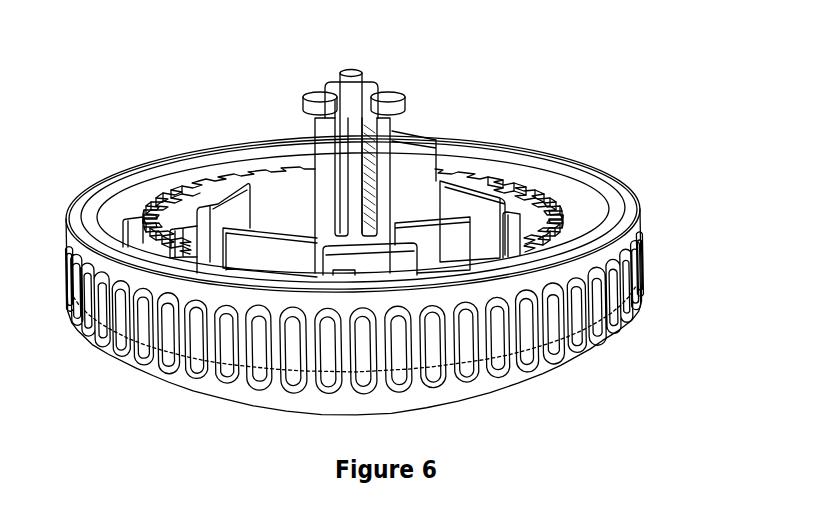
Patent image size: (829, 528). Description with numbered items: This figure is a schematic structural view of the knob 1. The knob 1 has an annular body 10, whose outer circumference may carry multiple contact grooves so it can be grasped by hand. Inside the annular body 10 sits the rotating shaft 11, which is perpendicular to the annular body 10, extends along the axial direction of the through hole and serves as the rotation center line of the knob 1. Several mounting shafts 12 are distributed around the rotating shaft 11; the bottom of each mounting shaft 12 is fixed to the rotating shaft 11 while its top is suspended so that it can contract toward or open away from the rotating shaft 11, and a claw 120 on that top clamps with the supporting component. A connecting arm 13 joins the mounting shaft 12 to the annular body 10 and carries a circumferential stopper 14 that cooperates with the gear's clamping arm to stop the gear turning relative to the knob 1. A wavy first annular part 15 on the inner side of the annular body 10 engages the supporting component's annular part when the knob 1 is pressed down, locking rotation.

The knob 1 is at (518, 98).
The annular body 10 is at (612, 198).
The rotating shaft 11 is at (352, 70).
The mounting shaft 12 is at (318, 160).
The claw 120 is at (298, 95).
The connecting arm 13 is at (410, 228).
The circumferential stopper 14 is at (202, 195).
The first annular part 15 is at (520, 182).